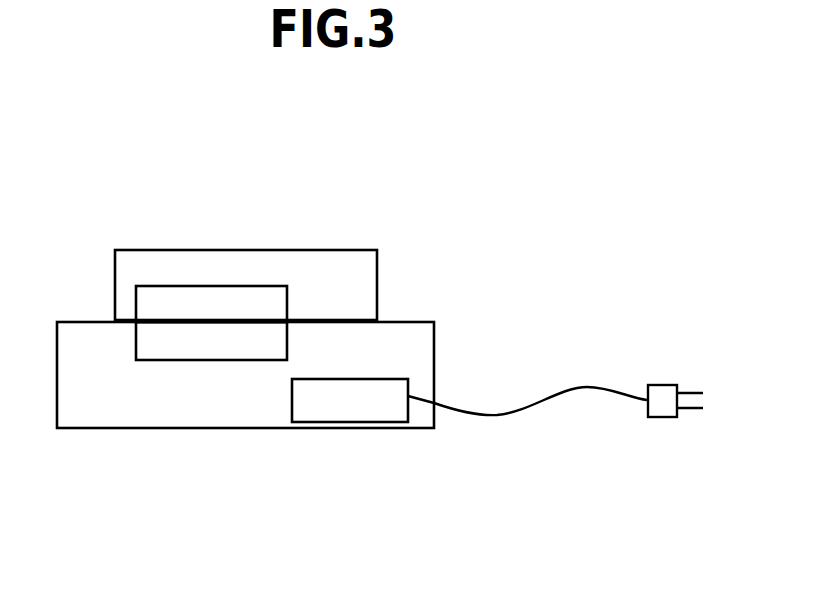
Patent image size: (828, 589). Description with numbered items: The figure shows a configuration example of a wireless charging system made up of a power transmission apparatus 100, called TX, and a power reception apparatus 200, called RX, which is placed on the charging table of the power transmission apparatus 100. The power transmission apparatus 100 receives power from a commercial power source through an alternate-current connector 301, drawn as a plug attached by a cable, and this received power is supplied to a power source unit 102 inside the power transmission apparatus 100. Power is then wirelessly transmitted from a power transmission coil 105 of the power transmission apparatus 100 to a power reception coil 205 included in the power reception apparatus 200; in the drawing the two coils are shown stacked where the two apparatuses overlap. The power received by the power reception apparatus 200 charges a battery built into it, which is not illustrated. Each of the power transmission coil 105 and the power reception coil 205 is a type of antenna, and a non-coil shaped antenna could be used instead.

The power transmission apparatus 100 is at (415, 322).
The power source unit 102 is at (355, 423).
The power transmission coil 105 is at (193, 360).
The power reception apparatus 200 is at (325, 250).
The power reception coil 205 is at (203, 286).
The AC connector 301 is at (663, 385).